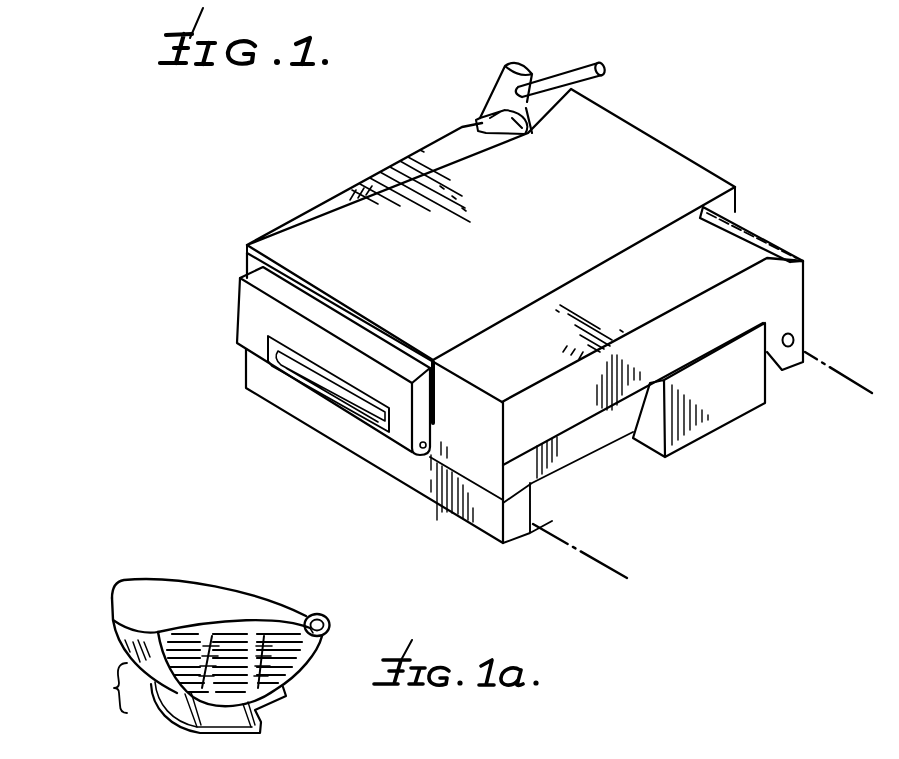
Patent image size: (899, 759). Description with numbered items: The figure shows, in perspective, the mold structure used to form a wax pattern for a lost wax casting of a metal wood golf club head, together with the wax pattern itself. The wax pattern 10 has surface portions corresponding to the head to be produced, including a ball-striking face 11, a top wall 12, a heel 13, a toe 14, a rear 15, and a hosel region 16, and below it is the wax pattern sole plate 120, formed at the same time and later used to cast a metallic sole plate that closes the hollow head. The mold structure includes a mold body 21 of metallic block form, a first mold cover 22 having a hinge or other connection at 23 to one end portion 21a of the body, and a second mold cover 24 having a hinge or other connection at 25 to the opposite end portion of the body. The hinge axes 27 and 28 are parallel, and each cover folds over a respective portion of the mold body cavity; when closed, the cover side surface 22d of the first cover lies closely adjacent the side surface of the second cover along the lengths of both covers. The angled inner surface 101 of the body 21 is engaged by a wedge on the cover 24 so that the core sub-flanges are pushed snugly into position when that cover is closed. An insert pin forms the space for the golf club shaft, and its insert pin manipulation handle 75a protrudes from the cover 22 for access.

In FIG. 1, the insert pin manipulation handle 75a is at (586, 62).
In FIG. 1, the first mold cover 22 is at (491, 224).
In FIG. 1, the second mold cover 24 is at (525, 331).
In FIG. 1, the hinge connection 25 is at (795, 338).
In FIG. 1, the mold body 21 is at (228, 381).
In FIG. 1, the hinge connection 23 is at (320, 383).
In FIG. 1, the end portion of body 21a is at (420, 472).
In FIG. 1, the angled inner surface of body 101 is at (647, 385).
In FIG. 1, the hinge axis 28 is at (842, 378).
In FIG. 1, the hinge axis 27 is at (607, 567).
In FIG. 1a, the wax pattern 10 is at (100, 567).
In FIG. 1a, the rear 15 is at (142, 575).
In FIG. 1a, the top wall 12 is at (188, 592).
In FIG. 1a, the toe 14 is at (113, 633).
In FIG. 1a, the hosel region 16 is at (302, 602).
In FIG. 1a, the heel 13 is at (316, 653).
In FIG. 1a, the ball-striking face 11 is at (283, 670).
In FIG. 1a, the cover side surface 22d is at (158, 736).
In FIG. 1a, the wax pattern sole plate 120 is at (247, 735).